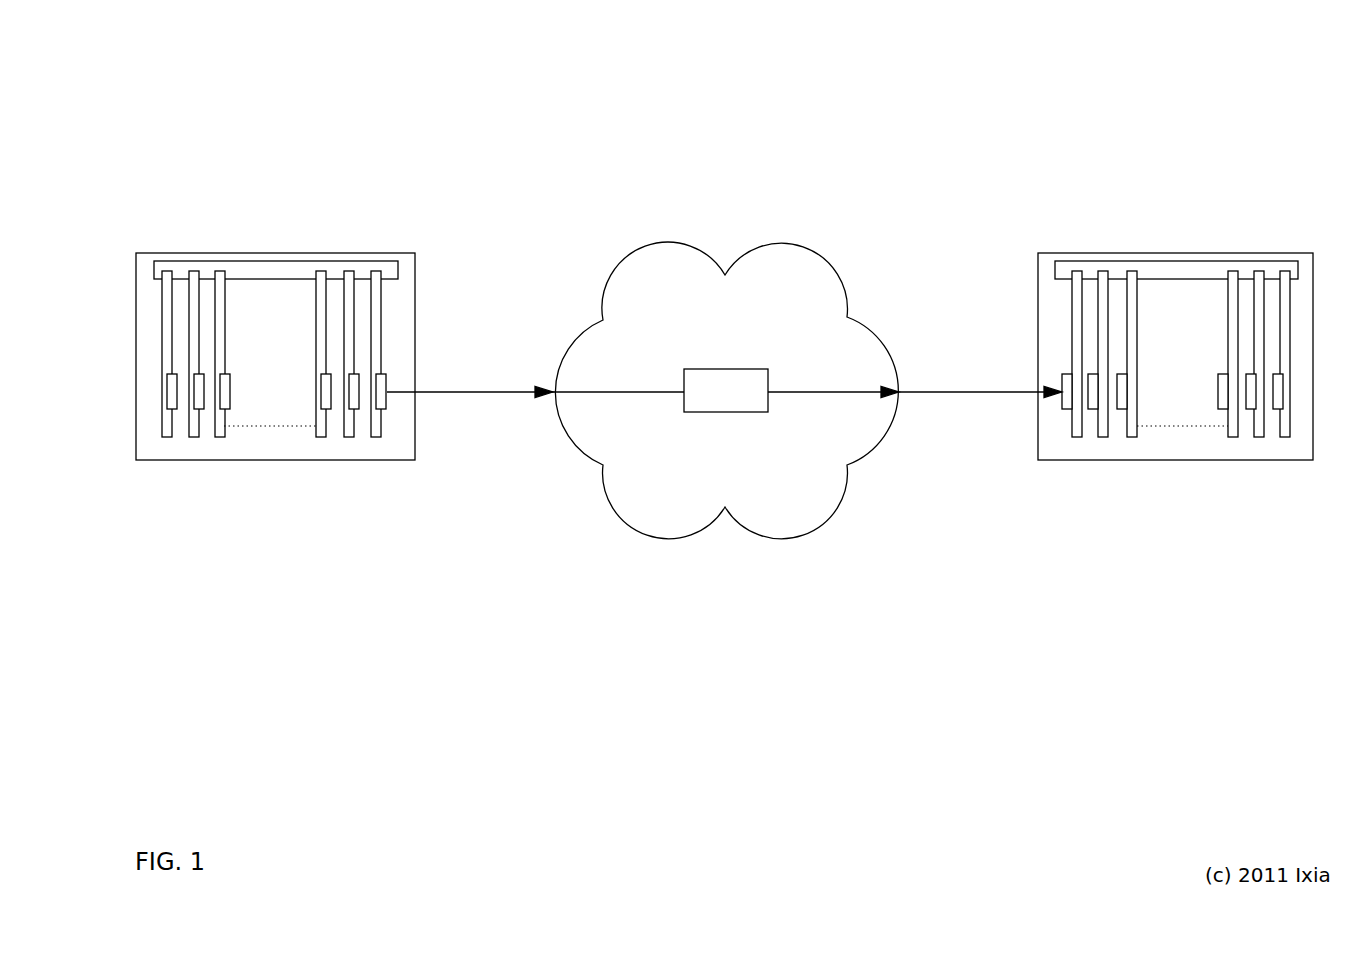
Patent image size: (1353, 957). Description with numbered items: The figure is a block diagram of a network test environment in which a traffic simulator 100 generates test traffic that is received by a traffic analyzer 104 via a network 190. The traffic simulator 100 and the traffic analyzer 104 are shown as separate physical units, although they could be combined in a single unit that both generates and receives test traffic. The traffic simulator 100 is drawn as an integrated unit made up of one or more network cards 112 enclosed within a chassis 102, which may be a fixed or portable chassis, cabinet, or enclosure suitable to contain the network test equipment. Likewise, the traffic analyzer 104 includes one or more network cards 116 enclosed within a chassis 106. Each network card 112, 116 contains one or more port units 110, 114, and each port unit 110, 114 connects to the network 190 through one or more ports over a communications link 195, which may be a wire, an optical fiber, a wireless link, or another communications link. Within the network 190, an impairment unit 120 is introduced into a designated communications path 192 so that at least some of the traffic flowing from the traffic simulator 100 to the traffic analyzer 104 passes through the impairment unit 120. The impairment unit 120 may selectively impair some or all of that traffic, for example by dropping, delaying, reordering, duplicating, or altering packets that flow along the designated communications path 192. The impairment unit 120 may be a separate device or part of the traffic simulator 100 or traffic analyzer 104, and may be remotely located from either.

The traffic simulator 100 is at (261, 121).
The chassis 102 is at (337, 252).
The traffic analyzer 104 is at (1170, 119).
The chassis 106 is at (1115, 252).
The port unit 110 is at (382, 410).
The network card 112 is at (375, 438).
The port unit 114 is at (1067, 410).
The network card 116 is at (1075, 438).
The impairment unit 120 is at (740, 369).
The network 190 is at (726, 390).
The designated communications path 192 is at (823, 391).
The communications link 195 is at (509, 391).